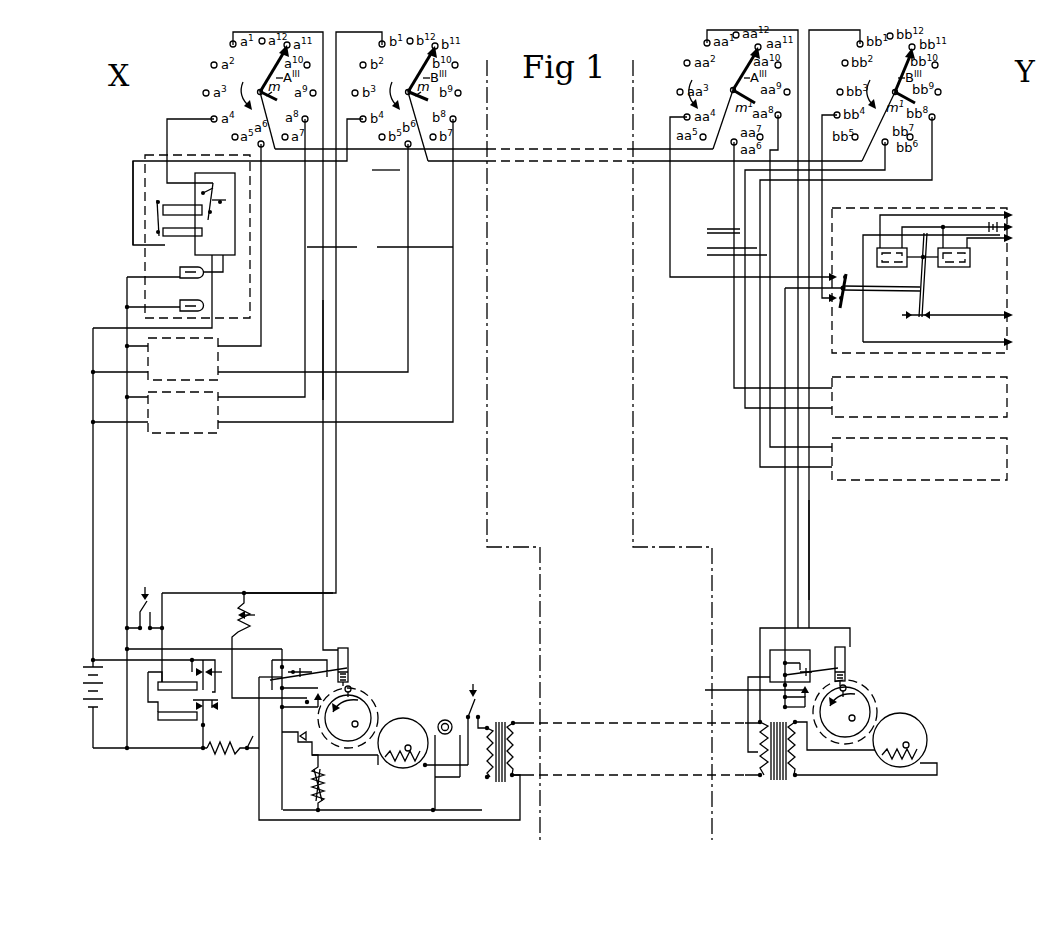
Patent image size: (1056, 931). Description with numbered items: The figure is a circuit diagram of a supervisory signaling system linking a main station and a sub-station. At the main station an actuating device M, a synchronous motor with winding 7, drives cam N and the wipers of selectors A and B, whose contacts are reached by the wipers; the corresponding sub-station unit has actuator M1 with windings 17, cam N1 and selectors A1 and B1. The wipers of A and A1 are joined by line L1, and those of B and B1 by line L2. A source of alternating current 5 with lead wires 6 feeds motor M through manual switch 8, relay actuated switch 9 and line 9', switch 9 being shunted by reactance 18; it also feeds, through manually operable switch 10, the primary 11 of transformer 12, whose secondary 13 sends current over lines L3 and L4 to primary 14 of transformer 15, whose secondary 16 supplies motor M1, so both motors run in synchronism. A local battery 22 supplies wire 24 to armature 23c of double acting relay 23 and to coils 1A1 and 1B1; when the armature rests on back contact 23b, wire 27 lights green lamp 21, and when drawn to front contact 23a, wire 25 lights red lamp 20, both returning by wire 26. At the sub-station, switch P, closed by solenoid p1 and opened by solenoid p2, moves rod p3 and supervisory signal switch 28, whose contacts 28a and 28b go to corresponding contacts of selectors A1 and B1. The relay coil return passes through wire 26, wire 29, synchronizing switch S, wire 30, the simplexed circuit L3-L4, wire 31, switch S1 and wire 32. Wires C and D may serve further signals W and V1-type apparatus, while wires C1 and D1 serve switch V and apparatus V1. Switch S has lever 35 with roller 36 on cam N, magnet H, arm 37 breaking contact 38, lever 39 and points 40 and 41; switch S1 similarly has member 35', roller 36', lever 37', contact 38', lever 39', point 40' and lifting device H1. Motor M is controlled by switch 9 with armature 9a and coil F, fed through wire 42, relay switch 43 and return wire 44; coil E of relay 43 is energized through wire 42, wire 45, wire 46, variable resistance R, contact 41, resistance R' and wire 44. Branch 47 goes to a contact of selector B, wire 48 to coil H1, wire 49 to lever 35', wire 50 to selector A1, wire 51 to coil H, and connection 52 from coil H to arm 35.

The selector A is at (285, 341).
The selector B is at (340, 312).
The selector A1 is at (743, 329).
The selector B1 is at (862, 329).
The channel or wire L1 is at (503, 150).
The channel or line L2 is at (503, 163).
The line L3 is at (605, 722).
The line L4 is at (605, 775).
The wires C is at (378, 171).
The wires D is at (380, 247).
The wires C1 is at (715, 231).
The wires D1 is at (728, 253).
The double acting relay 23 is at (170, 218).
The relay coil 1A1 is at (158, 202).
The relay coil 1B1 is at (158, 232).
The front contact 23a is at (205, 193).
The back contact 23b is at (222, 202).
The armature 23c is at (211, 213).
The wire 25 is at (237, 247).
The red lamp 20 is at (203, 272).
The green lamp 21 is at (203, 306).
The wire 27 is at (230, 286).
The lamp W is at (183, 385).
The wire 51 is at (328, 353).
The wire 24 is at (93, 491).
The wire 26 is at (127, 491).
The local battery 22 is at (83, 708).
The branch 47 is at (250, 596).
The wire 46 is at (157, 636).
The variable resistance R is at (269, 645).
The wire 29 is at (240, 649).
The wire 42 is at (133, 663).
The wire 45 is at (192, 660).
The relay switch 43 is at (203, 672).
The coil E is at (158, 687).
The coil F is at (158, 716).
The circuit closing armature 9a is at (197, 705).
The relay actuated switch 9 is at (222, 709).
The return wire 44 is at (150, 757).
The resistance R' is at (232, 761).
The line 9' is at (244, 758).
The wire 30 is at (258, 808).
The contact 41 is at (305, 701).
The switch arm or lever 37 is at (294, 710).
The connection 52 is at (270, 668).
The contact 38 is at (305, 654).
The lever 39 is at (303, 708).
The contact point 40 is at (326, 698).
The magnet H is at (338, 651).
The synchronizing switch S is at (348, 680).
The switch lever 35 is at (364, 680).
The roller 36 is at (365, 693).
The cam element N is at (398, 703).
The manual switch 8 is at (312, 744).
The reactance 18 is at (326, 784).
The actuating device M is at (403, 743).
The motor winding 7 is at (417, 768).
The source of alternating or pulsating current 5 is at (448, 717).
The lead wires 6 is at (446, 746).
The manually operable switch 10 is at (477, 697).
The transformer 12 is at (492, 722).
The primary 11 is at (506, 761).
The secondary 13 is at (516, 738).
The wire 32 is at (783, 542).
The wire 48 is at (811, 542).
The switch P is at (922, 280).
The solenoid p1 is at (947, 270).
The solenoid p2 is at (885, 270).
The rod p3 is at (880, 292).
The supervisory signal switch 28 is at (845, 283).
The contact 28a is at (844, 274).
The contact 28b is at (841, 303).
The switch V is at (919, 397).
The apparatus V1 is at (919, 459).
The wire 50 is at (760, 640).
The wire 49 is at (770, 660).
The lever 37' is at (800, 648).
The contact 38' is at (818, 651).
The contact point 40' is at (757, 684).
The wire 31 is at (748, 704).
The switch lever 39' is at (790, 717).
The electromagnetic lifting device H1 is at (850, 651).
The synchronizing switch S1 is at (846, 678).
The switch member 35' is at (876, 681).
The cam engaging roller 36' is at (878, 695).
The cam N1 is at (876, 708).
The primary 14 is at (760, 770).
The transformer 15 is at (778, 780).
The secondary 16 is at (797, 770).
The windings 17 is at (900, 765).
The actuator M1 is at (900, 740).